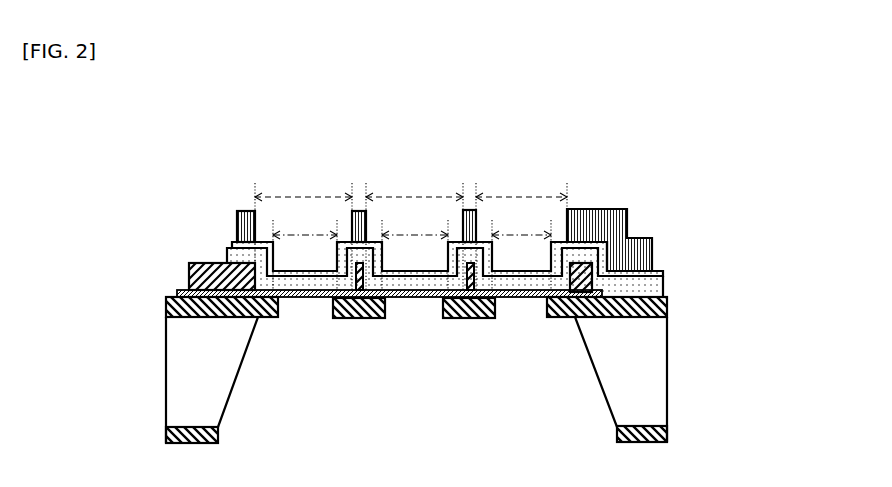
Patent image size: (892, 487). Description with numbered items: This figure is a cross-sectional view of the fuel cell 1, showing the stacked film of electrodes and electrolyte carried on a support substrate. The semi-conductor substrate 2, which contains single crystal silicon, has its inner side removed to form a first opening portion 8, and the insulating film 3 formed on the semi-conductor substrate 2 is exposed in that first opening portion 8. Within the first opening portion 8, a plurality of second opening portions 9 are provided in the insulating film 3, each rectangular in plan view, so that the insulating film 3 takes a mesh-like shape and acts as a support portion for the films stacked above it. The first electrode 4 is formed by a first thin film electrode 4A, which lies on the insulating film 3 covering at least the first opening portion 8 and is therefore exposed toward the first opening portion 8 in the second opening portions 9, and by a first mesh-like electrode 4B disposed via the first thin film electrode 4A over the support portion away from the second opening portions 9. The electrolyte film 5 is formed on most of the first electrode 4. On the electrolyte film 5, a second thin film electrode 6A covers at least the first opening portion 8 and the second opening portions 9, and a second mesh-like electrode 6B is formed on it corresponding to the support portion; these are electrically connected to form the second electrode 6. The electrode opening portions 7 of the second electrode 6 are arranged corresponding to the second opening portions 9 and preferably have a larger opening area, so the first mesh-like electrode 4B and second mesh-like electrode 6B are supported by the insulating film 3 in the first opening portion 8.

The fuel cell 1 is at (245, 205).
The semi-conductor substrate 2 is at (655, 370).
The insulating film 3 is at (667, 310).
The first electrode 4 is at (313, 245).
The first thin film electrode 4A is at (177, 292).
The first mesh-like electrode 4B is at (188, 263).
The electrolyte film 5 is at (663, 285).
The second electrode 6 is at (511, 223).
The second thin film electrode 6A is at (664, 268).
The second mesh-like electrode 6B is at (622, 223).
The electrode opening portion 7 is at (517, 215).
The first opening portion 8 is at (515, 378).
The second opening portion 9 is at (410, 304).